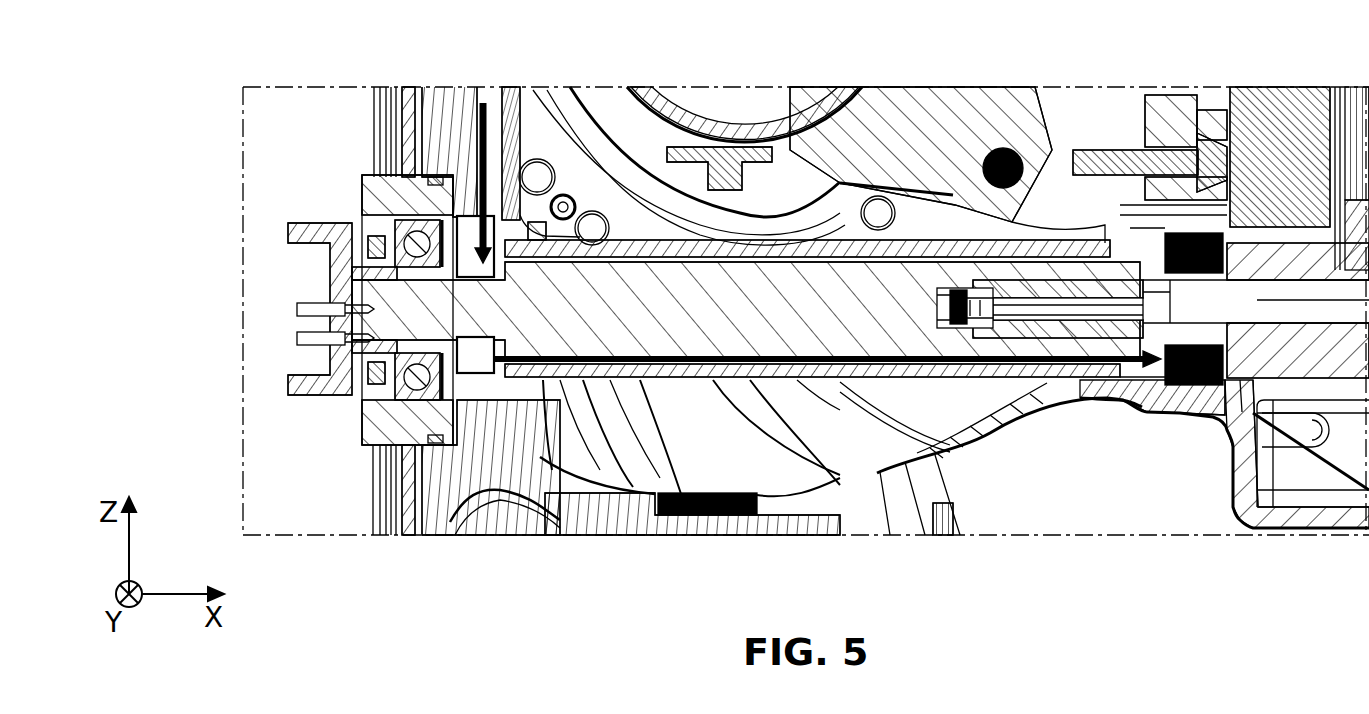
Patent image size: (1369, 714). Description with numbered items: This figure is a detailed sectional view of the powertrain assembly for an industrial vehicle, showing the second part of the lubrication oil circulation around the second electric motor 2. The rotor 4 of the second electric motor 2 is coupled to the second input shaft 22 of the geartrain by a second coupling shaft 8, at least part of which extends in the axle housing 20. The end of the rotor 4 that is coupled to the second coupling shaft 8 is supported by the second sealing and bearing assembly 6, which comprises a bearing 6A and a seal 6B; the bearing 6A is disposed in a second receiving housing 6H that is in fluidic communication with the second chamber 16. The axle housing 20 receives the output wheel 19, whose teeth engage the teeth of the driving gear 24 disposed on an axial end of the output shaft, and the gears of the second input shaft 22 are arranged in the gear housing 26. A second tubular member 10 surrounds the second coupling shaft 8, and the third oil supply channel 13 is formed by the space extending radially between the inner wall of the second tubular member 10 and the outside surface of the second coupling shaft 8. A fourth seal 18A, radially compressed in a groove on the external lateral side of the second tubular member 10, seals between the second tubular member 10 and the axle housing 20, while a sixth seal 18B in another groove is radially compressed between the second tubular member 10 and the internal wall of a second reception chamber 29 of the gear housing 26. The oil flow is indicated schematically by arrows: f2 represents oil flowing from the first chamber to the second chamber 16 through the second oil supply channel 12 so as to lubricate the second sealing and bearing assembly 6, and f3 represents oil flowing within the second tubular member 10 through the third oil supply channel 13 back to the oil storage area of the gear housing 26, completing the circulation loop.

The second electric motor 2 is at (318, 448).
The rotor 4 is at (307, 343).
The second sealing and bearing assembly 6 is at (192, 287).
The bearing 6A is at (380, 255).
The seal 6B is at (395, 238).
The second receiving housing 6H is at (385, 200).
The second coupling shaft 8 is at (595, 318).
The second tubular member 10 is at (877, 372).
The second oil supply channel 12 is at (478, 122).
The third oil supply channel 13 is at (707, 258).
The second chamber 16 is at (531, 225).
The fourth seal 18A is at (508, 420).
The sixth seal 18B is at (1110, 377).
The output wheel 19 is at (782, 463).
The axle housing 20 is at (453, 482).
The second input shaft 22 is at (1047, 332).
The driving gear 24 is at (1037, 108).
The gear housing 26 is at (1250, 503).
The second reception chamber 29 is at (1107, 243).
The oil flow f2 is at (487, 160).
The oil flow f3 is at (953, 364).